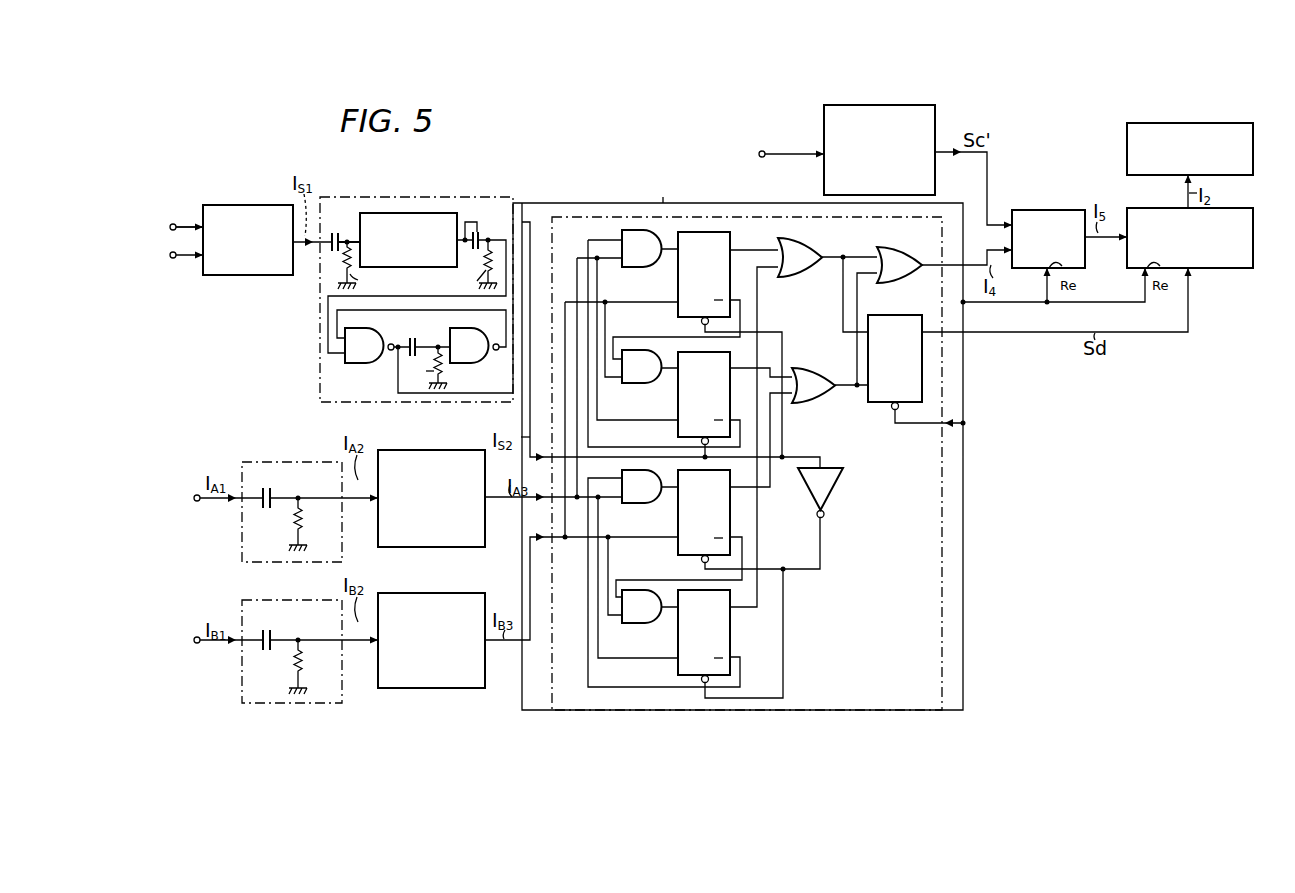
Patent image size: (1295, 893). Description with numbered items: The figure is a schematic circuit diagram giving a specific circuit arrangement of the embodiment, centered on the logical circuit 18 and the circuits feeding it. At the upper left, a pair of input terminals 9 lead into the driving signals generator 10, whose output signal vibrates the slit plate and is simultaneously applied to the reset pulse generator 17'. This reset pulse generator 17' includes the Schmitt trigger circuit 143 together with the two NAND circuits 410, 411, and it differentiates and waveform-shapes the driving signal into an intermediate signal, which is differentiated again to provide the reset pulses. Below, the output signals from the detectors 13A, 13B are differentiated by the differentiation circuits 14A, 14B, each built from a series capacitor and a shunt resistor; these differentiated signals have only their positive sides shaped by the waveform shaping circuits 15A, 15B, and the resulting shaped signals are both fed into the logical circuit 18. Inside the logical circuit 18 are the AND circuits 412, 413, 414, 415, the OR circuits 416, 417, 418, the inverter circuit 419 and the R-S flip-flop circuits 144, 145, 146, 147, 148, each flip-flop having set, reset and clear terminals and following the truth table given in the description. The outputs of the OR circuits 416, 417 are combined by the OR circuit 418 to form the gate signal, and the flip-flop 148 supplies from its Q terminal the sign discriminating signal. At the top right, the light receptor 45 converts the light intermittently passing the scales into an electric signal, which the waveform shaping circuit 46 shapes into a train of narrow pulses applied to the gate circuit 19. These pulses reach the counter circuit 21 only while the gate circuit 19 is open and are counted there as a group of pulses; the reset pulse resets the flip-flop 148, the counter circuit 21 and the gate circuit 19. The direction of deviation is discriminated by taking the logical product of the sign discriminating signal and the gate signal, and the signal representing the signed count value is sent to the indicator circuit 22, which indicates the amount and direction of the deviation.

The input terminals 9 is at (173, 241).
The driving signals generator 10 is at (248, 206).
The detector 13A is at (206, 500).
The detector 13B is at (206, 640).
The differentiation circuit 14A is at (272, 462).
The differentiation circuit 14B is at (272, 600).
The waveform shaping circuit 15A is at (463, 450).
The waveform shaping circuit 15B is at (437, 593).
The reset pulse generator 17' is at (641, 436).
The logical circuit 18 is at (577, 216).
The gate circuit 19 is at (1043, 210).
The counter circuit 21 is at (1253, 235).
The indicator circuit 22 is at (1127, 135).
The light receptor 45 is at (773, 155).
The waveform shaping circuit 46 is at (823, 117).
The Schmitt trigger circuit 143 is at (413, 213).
The R-S flip-flop circuit 144 is at (730, 234).
The R-S flip-flop circuit 145 is at (678, 401).
The R-S flip-flop circuit 146 is at (730, 512).
The R-S flip-flop circuit 147 is at (730, 632).
The R-S flip-flop circuit 148 is at (893, 315).
The NAND circuit 410 is at (369, 357).
The NAND circuit 411 is at (478, 357).
The AND circuit 412 is at (638, 268).
The AND circuit 413 is at (637, 350).
The AND circuit 414 is at (640, 504).
The AND circuit 415 is at (640, 624).
The OR circuit 416 is at (796, 247).
The OR circuit 417 is at (808, 368).
The OR circuit 418 is at (898, 247).
The inverter circuit 419 is at (836, 483).